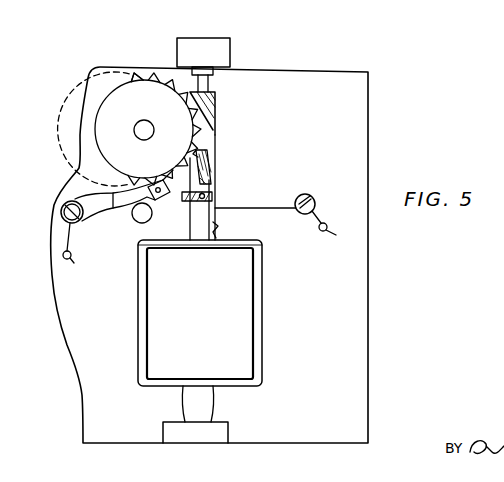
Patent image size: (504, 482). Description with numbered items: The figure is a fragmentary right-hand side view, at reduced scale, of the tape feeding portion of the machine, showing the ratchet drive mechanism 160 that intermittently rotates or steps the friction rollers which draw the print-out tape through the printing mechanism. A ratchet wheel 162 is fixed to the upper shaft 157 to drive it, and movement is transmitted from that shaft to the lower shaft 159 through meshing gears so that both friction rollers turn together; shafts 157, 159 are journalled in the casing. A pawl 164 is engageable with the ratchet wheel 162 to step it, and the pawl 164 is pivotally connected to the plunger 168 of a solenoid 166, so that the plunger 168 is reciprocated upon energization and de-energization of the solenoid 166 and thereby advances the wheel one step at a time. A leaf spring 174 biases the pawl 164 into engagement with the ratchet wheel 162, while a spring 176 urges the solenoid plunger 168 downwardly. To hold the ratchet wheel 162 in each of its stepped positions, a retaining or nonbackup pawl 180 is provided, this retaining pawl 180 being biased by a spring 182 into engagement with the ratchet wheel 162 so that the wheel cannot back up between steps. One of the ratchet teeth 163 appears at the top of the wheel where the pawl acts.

The shaft 157 is at (152, 108).
The shaft 159 is at (150, 218).
The ratchet drive mechanism 160 is at (92, 184).
The ratchet wheel 162 is at (100, 123).
The ratchet tooth 163 is at (162, 68).
The pawl 164 is at (208, 153).
The solenoid 166 is at (152, 325).
The plunger 168 is at (217, 123).
The leaf spring 174 is at (215, 171).
The spring 176 is at (268, 207).
The retaining pawl 180 is at (95, 207).
The spring 182 is at (73, 246).